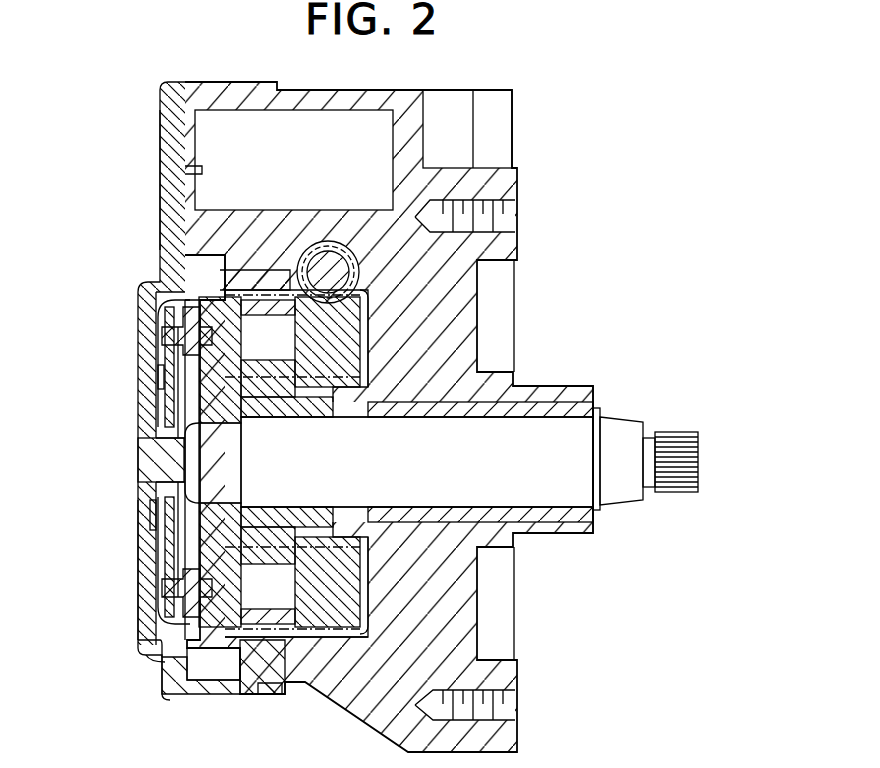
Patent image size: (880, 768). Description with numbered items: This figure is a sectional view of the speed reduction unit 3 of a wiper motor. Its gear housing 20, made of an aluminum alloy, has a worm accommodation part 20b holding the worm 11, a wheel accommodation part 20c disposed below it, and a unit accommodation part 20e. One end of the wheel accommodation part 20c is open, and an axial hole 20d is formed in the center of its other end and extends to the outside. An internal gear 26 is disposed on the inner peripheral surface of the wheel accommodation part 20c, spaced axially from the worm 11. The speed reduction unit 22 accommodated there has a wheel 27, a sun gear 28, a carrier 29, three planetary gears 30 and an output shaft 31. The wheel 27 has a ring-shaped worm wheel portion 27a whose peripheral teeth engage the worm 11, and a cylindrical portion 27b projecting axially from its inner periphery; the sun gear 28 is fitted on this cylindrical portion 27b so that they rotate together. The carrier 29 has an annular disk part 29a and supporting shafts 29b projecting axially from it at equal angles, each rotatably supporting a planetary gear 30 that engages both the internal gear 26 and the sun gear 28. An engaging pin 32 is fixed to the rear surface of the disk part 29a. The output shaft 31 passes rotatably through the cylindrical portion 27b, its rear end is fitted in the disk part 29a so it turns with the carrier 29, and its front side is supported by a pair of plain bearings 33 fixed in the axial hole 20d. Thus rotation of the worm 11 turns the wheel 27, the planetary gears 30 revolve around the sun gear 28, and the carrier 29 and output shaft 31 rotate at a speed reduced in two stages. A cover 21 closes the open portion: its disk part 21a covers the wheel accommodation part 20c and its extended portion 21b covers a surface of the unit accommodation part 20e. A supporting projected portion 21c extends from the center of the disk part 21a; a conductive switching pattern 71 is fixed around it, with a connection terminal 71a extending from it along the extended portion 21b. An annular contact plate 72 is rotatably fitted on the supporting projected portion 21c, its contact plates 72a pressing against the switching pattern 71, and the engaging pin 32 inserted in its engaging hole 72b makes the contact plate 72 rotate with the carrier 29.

The speed reduction unit 3 is at (537, 262).
The worm 11 is at (300, 260).
The gear housing 20 is at (463, 310).
The worm accommodation part 20b is at (334, 242).
The wheel accommodation part 20c is at (348, 632).
The axial hole 20d is at (557, 405).
The unit accommodation part 20e is at (318, 112).
The cover 21 is at (126, 451).
The disk part 21a is at (138, 518).
The extended portion 21b is at (161, 117).
The supporting projected portion 21c is at (165, 468).
The speed reduction unit 22 is at (374, 582).
The internal gear 26 is at (266, 640).
The wheel 27 is at (440, 470).
The worm wheel portion 27a is at (385, 417).
The cylindrical portion 27b is at (273, 423).
The sun gear 28 is at (250, 405).
The carrier 29 is at (62, 618).
The disk part 29a is at (150, 626).
The supporting shafts 29b is at (155, 652).
The planetary gears 30 is at (260, 292).
The output shaft 31 is at (445, 427).
The engaging pin 32 is at (200, 300).
The plain bearings 33 is at (415, 503).
The switching pattern 71 is at (160, 346).
The connection terminal 71a is at (203, 168).
The contact plate 72 is at (175, 397).
The contact plates 72a is at (163, 375).
The engaging hole 72b is at (167, 327).